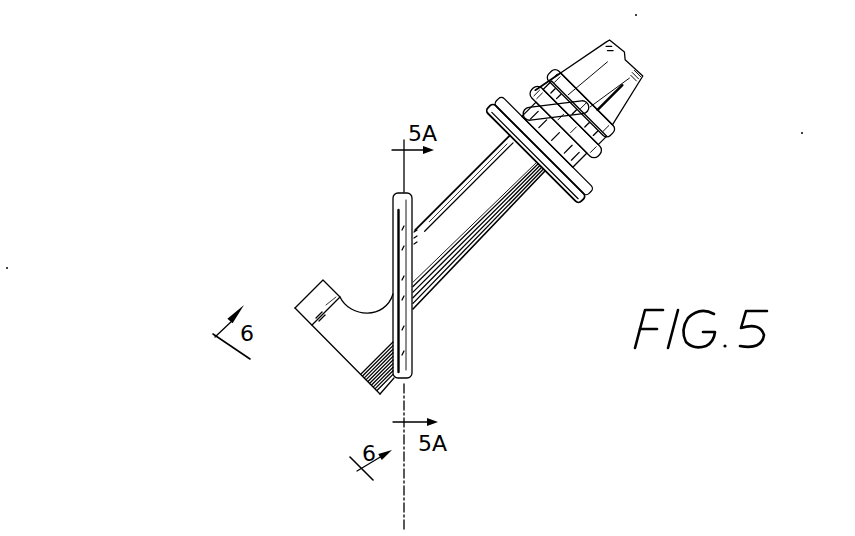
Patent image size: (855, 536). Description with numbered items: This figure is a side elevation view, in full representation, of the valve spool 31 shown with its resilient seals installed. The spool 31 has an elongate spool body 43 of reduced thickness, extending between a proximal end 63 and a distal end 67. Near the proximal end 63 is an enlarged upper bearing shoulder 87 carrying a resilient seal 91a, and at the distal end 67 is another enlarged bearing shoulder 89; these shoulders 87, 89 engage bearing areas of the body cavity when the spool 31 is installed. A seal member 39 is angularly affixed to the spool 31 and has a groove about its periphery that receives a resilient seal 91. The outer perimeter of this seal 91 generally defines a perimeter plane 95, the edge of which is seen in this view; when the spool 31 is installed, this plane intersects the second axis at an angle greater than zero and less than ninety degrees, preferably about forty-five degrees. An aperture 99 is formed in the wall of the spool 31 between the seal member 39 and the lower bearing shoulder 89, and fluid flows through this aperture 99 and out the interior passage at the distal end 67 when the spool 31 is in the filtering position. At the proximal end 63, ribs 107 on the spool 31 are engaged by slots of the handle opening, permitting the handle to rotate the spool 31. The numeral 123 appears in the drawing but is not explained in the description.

The valve spool 31 is at (648, 203).
The seal member 39 is at (393, 227).
The spool body 43 is at (462, 277).
The proximal end 63 is at (628, 127).
The distal end 67 is at (297, 312).
The upper bearing shoulder 87 is at (588, 178).
The bearing shoulder 89 is at (312, 293).
The resilient seal 91 is at (411, 374).
The resilient seal 91a is at (588, 205).
The perimeter plane 95 is at (405, 476).
The aperture 99 is at (367, 280).
The ribs 107 is at (535, 93).
The nut 123 is at (545, 86).